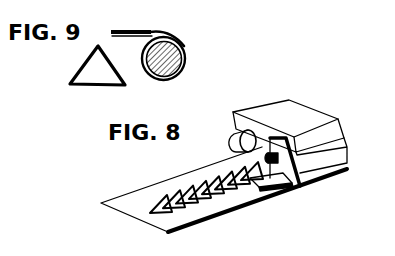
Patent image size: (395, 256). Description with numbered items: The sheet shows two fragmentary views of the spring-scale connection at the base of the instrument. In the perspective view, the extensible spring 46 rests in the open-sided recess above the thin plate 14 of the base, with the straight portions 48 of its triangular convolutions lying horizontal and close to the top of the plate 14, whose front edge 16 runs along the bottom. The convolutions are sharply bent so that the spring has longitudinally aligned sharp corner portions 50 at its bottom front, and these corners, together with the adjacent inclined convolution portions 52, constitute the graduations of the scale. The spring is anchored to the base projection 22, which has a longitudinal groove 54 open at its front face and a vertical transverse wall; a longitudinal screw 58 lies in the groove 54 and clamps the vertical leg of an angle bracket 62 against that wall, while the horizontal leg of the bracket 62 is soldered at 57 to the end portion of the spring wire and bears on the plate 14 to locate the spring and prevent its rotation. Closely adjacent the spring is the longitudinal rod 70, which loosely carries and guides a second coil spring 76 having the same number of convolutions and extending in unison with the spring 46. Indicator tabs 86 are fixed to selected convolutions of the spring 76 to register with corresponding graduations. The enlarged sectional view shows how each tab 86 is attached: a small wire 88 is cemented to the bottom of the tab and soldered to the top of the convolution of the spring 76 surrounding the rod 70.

In FIG. 8, the thin plate 14 is at (136, 200).
In FIG. 8, the plate edge 16 is at (237, 211).
In FIG. 8, the base projection 22 is at (305, 110).
In FIG. 9, the extensible spring 46 is at (80, 70).
In FIG. 8, the extensible spring 46 is at (213, 182).
In FIG. 8, the straight portions of the convolutions 48 is at (197, 212).
In FIG. 8, the sharp corner portions 50 is at (249, 193).
In FIG. 8, the inclined convolution portions 52 is at (173, 217).
In FIG. 8, the longitudinal groove 54 is at (333, 177).
In FIG. 8, the soldered connection 57 is at (280, 190).
In FIG. 8, the longitudinal screw 58 is at (266, 152).
In FIG. 8, the angle bracket 62 is at (293, 189).
In FIG. 9, the longitudinal rod 70 is at (181, 72).
In FIG. 8, the longitudinal rod 70 is at (228, 128).
In FIG. 9, the coil spring 76 is at (185, 51).
In FIG. 9, the tab 86 is at (138, 30).
In FIG. 9, the small wire 88 is at (165, 34).